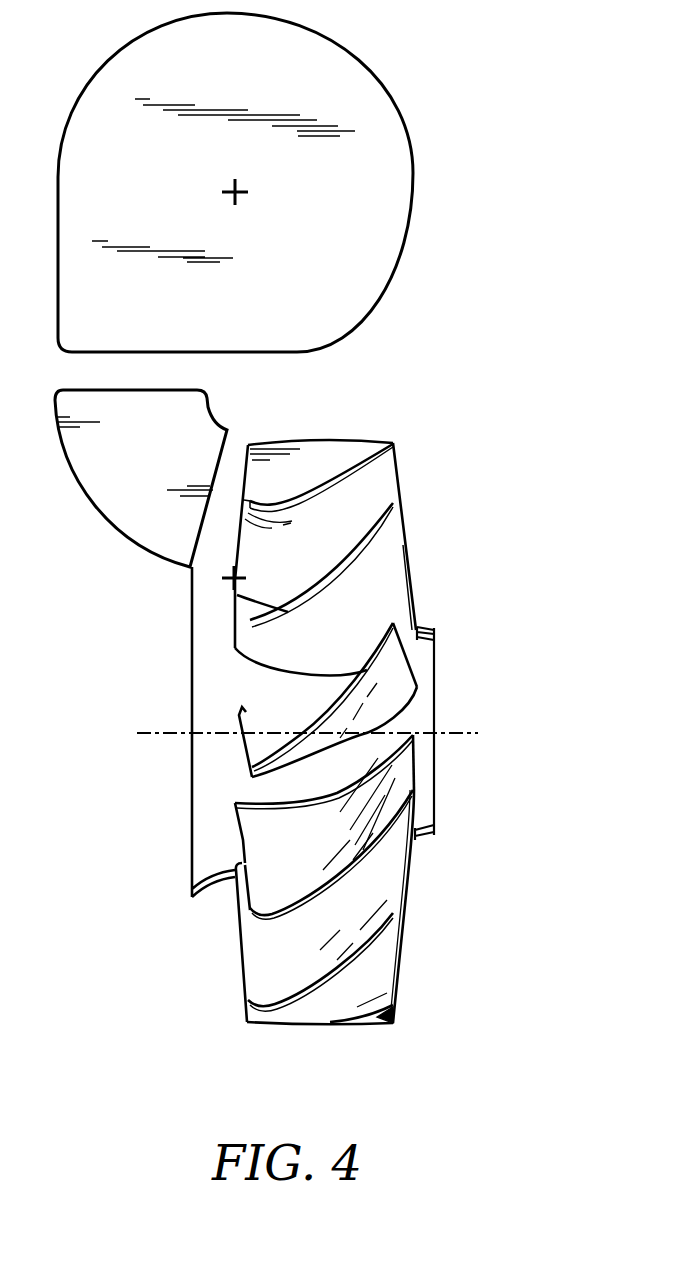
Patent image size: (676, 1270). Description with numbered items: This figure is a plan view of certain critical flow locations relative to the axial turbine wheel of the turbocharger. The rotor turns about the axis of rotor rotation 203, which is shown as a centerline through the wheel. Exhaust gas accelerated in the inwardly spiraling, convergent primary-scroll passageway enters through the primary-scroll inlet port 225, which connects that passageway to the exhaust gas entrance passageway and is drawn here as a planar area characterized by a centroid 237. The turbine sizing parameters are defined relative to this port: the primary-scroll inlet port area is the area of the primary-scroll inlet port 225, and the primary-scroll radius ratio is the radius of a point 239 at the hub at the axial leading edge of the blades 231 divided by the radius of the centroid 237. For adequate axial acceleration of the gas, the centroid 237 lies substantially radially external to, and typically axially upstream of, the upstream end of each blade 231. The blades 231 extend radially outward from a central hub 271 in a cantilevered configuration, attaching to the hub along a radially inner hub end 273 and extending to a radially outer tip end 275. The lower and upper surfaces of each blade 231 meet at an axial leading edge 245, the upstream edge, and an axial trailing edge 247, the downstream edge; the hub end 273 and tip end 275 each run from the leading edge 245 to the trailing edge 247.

The primary-scroll inlet port 225 is at (413, 172).
The centroid 237 is at (241, 183).
The blade 231 is at (358, 475).
The point at the hub at the axial leading edge 239 is at (222, 585).
The radially inner hub end 273 is at (300, 727).
The axis of rotor rotation 203 is at (478, 713).
The central hub 271 is at (220, 767).
The axial leading edge 245 is at (242, 970).
The axial trailing edge 247 is at (407, 955).
The radially outer tip end 275 is at (305, 1025).